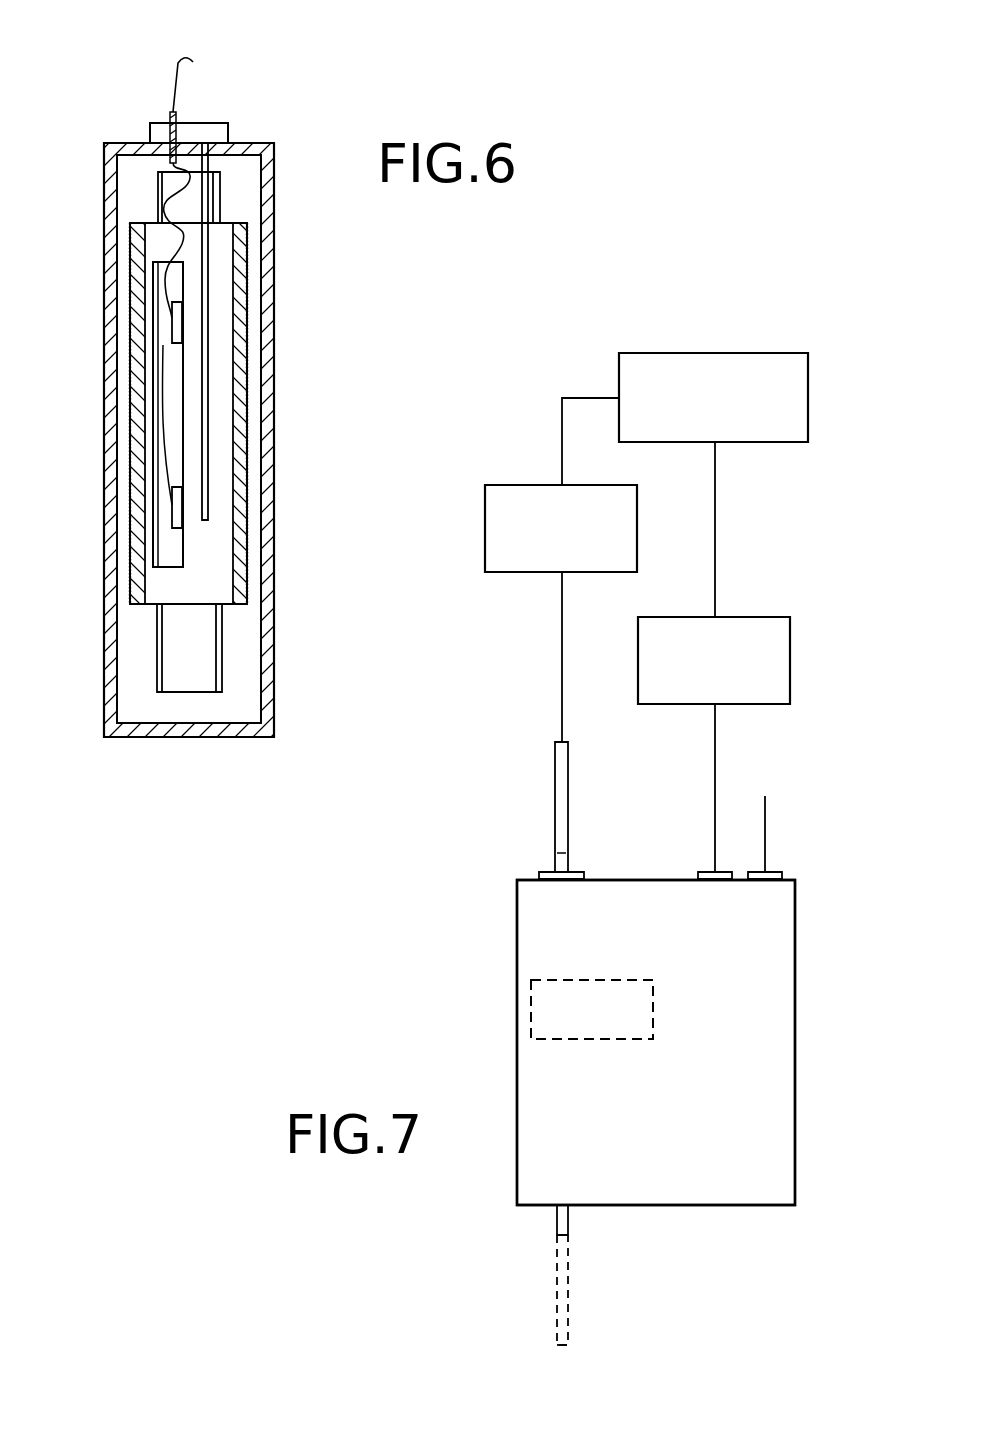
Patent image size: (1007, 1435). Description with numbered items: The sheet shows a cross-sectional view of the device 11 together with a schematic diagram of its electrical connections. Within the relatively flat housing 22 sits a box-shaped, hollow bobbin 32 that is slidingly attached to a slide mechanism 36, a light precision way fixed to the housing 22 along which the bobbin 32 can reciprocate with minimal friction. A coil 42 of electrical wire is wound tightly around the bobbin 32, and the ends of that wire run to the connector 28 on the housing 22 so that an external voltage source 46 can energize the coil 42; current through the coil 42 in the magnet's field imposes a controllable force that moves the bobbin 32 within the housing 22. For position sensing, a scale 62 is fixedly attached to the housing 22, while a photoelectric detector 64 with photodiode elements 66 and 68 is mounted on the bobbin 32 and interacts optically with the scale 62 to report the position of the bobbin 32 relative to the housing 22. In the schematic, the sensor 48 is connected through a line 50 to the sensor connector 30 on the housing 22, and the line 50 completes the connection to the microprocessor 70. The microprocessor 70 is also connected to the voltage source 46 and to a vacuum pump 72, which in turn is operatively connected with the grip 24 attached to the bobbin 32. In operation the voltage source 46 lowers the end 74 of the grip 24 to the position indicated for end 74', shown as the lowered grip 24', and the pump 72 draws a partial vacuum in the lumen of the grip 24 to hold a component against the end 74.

In FIG. 7, the device 11 is at (503, 915).
In FIG. 6, the housing 22 is at (274, 270).
In FIG. 7, the housing 22 is at (737, 1165).
In FIG. 7, the grip 24 is at (512, 725).
In FIG. 7, the grip (lowered position) 24' is at (618, 1290).
In FIG. 7, the connector 28 is at (703, 870).
In FIG. 6, the sensor connector 30 is at (227, 123).
In FIG. 7, the sensor connector 30 is at (773, 870).
In FIG. 6, the bobbin 32 is at (220, 495).
In FIG. 6, the slide mechanism 36 is at (192, 650).
In FIG. 6, the coil 42 is at (249, 415).
In FIG. 7, the voltage source 46 is at (760, 615).
In FIG. 7, the sensor 48 is at (532, 1003).
In FIG. 6, the line 50 is at (175, 82).
In FIG. 7, the line 50 is at (765, 803).
In FIG. 6, the scale 62 is at (210, 347).
In FIG. 6, the photoelectric detector 64 is at (156, 279).
In FIG. 6, the photodiode element 66 is at (175, 333).
In FIG. 6, the photodiode element 68 is at (175, 517).
In FIG. 7, the microprocessor 70 is at (752, 353).
In FIG. 7, the vacuum pump 72 is at (520, 485).
In FIG. 7, the end of grip 74 is at (500, 1233).
In FIG. 7, the end of grip (lowered position) 74' is at (502, 1332).